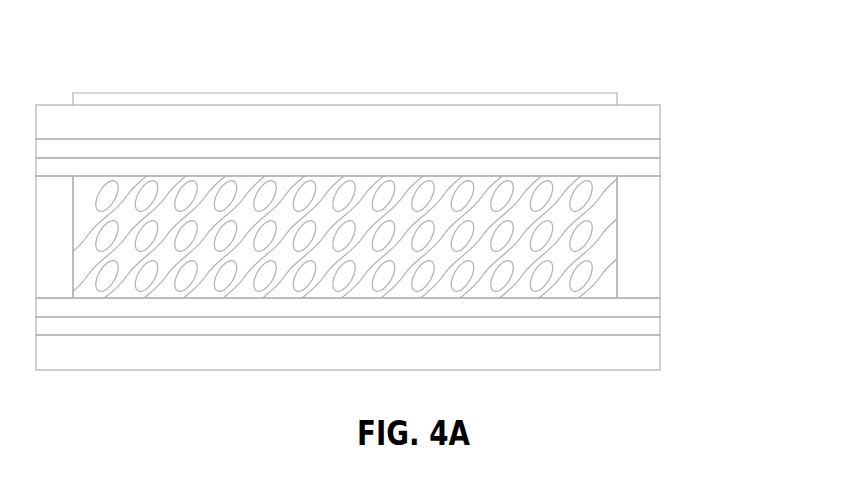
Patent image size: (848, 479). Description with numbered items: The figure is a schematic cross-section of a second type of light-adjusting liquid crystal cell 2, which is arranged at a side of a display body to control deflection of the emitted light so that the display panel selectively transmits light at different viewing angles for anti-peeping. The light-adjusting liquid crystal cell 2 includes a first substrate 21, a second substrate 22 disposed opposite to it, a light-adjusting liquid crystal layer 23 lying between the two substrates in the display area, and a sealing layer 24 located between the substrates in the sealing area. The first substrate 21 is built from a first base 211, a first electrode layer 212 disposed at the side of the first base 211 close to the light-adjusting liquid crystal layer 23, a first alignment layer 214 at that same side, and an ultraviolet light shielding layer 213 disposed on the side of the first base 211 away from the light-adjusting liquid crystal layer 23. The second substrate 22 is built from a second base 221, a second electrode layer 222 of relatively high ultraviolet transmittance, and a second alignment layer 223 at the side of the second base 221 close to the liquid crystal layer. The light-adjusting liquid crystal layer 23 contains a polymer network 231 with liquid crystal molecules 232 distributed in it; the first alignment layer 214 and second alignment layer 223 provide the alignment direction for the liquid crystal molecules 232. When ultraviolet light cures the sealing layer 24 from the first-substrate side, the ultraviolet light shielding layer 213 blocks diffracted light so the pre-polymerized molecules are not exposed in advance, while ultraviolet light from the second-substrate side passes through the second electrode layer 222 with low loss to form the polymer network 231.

The light-adjusting liquid crystal cell 2 is at (93, 61).
The first substrate 21 is at (732, 96).
The first base 211 is at (640, 124).
The first electrode layer 212 is at (635, 144).
The ultraviolet light shielding layer 213 is at (610, 100).
The first alignment layer 214 is at (635, 164).
The second substrate 22 is at (722, 302).
The second base 221 is at (627, 357).
The second electrode layer 222 is at (623, 325).
The second alignment layer 223 is at (623, 305).
The light-adjusting liquid crystal layer 23 is at (713, 235).
The polymer network 231 is at (600, 242).
The liquid crystal molecules 232 is at (583, 273).
The sealing layer 24 is at (635, 213).